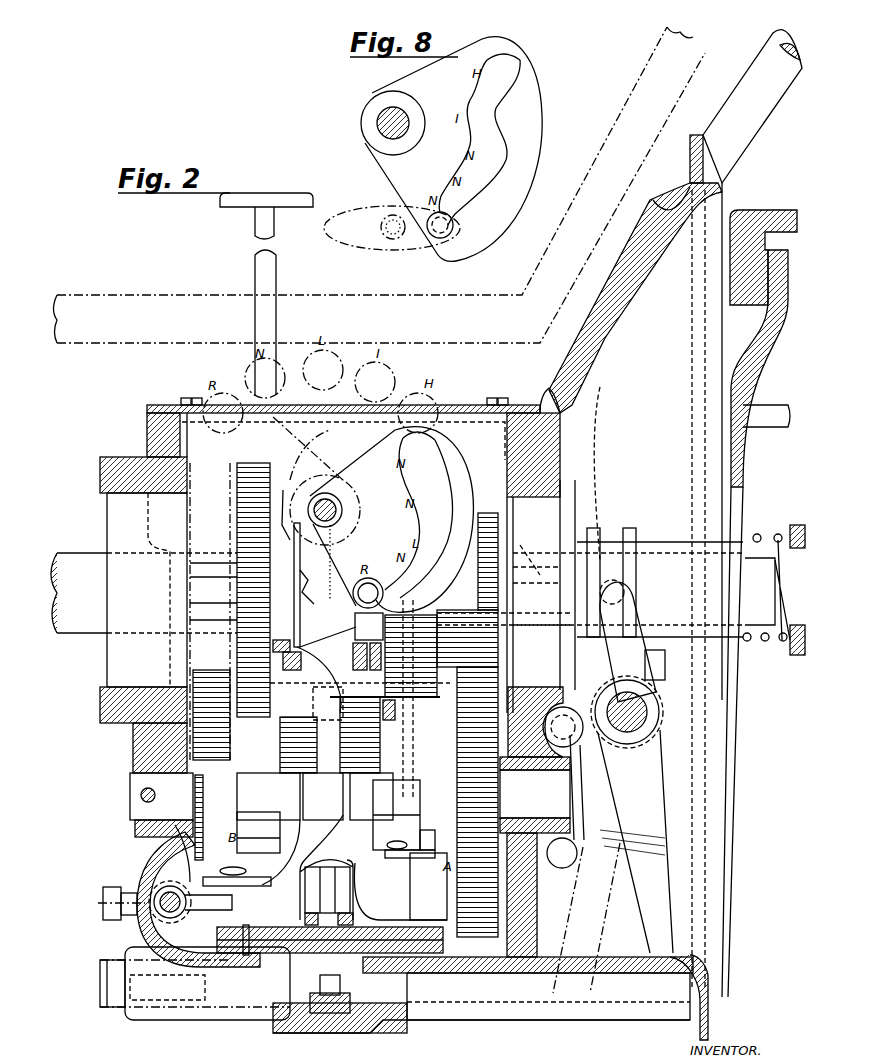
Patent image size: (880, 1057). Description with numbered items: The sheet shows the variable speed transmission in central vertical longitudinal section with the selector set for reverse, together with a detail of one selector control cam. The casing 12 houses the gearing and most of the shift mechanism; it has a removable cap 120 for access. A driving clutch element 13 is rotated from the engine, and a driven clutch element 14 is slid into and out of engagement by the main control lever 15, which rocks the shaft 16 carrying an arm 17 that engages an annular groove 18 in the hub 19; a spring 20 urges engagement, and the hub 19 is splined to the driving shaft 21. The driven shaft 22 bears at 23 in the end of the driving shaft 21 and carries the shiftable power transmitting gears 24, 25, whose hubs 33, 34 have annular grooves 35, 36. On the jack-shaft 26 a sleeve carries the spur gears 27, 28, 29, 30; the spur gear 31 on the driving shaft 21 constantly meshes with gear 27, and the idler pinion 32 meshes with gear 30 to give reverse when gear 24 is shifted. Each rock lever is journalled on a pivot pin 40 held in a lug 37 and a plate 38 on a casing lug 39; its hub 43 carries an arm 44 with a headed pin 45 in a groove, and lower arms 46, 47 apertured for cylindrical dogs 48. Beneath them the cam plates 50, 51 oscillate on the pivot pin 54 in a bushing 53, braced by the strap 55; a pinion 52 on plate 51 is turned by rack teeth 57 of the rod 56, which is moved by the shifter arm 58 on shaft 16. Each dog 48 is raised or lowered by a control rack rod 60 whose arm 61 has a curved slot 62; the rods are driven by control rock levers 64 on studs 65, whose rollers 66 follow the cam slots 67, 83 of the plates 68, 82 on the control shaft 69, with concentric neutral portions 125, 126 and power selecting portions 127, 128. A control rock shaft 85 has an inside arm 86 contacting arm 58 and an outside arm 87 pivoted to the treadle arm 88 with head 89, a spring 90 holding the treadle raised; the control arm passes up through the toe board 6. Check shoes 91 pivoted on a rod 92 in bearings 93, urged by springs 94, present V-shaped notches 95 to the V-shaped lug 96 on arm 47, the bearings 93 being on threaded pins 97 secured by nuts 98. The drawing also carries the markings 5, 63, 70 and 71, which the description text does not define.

In FIG. 2, the shift lever (phantom) 5 is at (103, 300).
In FIG. 2, the toe board 6 is at (688, 45).
In FIG. 2, the casing 12 is at (155, 432).
In FIG. 2, the driving clutch element 13 is at (770, 208).
In FIG. 2, the driven clutch element 14 is at (772, 326).
In FIG. 2, the main control lever 15 is at (752, 124).
In FIG. 2, the shaft 16 is at (642, 722).
In FIG. 2, the arm 17 is at (630, 597).
In FIG. 2, the annular groove 18 is at (605, 545).
In FIG. 2, the hub 19 is at (648, 545).
In FIG. 2, the spring 20 is at (757, 535).
In FIG. 2, the driving shaft 21 is at (780, 600).
In FIG. 2, the driven shaft 22 is at (80, 560).
In FIG. 2, the bearing recess 23 is at (482, 565).
In FIG. 2, the power transmitting gear 24 is at (252, 466).
In FIG. 2, the power transmitting gear 25 is at (440, 705).
In FIG. 2, the jack-shaft 26 is at (130, 812).
In FIG. 2, the spur gear 27 is at (520, 773).
In FIG. 2, the spur gear 28 is at (340, 766).
In FIG. 2, the spur gear 29 is at (290, 766).
In FIG. 2, the spur gear 30 is at (203, 780).
In FIG. 2, the spur gear 31 is at (480, 655).
In FIG. 2, the idler spur pinion 32 is at (218, 672).
In FIG. 2, the hub 33 is at (296, 522).
In FIG. 2, the hub 34 is at (353, 655).
In FIG. 2, the annular groove 35 is at (286, 508).
In FIG. 2, the annular groove 36 is at (384, 622).
In FIG. 2, the lower lever supporting lug 37 is at (327, 890).
In FIG. 2, the plate 38 is at (470, 690).
In FIG. 2, the casing lug 39 is at (458, 752).
In FIG. 2, the pivot pin 40 is at (350, 845).
In FIG. 2, the hub 43 is at (345, 815).
In FIG. 2, the arm 44 is at (319, 681).
In FIG. 2, the headed pin 45 is at (288, 638).
In FIG. 2, the arm 46 is at (380, 917).
In FIG. 2, the arm 47 is at (256, 929).
In FIG. 2, the cylindrical dog 48 is at (428, 886).
In FIG. 2, the plate 50 is at (220, 935).
In FIG. 2, the plate 51 is at (215, 945).
In FIG. 2, the pinion 52 is at (275, 988).
In FIG. 2, the bushing 53 is at (305, 1033).
In FIG. 2, the pivot pin 54 is at (330, 995).
In FIG. 2, the cross piece or strap 55 is at (305, 920).
In FIG. 2, the rod 56 is at (455, 1000).
In FIG. 2, the rack teeth 57 is at (445, 995).
In FIG. 2, the shifter arm 58 is at (662, 860).
In FIG. 2, the control rack rod 60 is at (405, 808).
In FIG. 2, the arm 61 is at (228, 873).
In FIG. 2, the curved slot 62 is at (345, 837).
In FIG. 2, the pivot pin 63 is at (338, 493).
In FIG. 8, the control rock lever 64 is at (366, 207).
In FIG. 2, the control rock lever 64 is at (347, 562).
In FIG. 8, the stud 65 is at (382, 229).
In FIG. 2, the stud 65 is at (302, 604).
In FIG. 8, the cam follower or roller 66 is at (448, 213).
In FIG. 2, the cam follower or roller 66 is at (370, 576).
In FIG. 2, the cam slot 67 is at (440, 515).
In FIG. 2, the plate 68 is at (372, 458).
In FIG. 8, the control shaft 69 is at (380, 118).
In FIG. 2, the link 70 is at (296, 445).
In FIG. 2, the rod 71 is at (760, 420).
In FIG. 8, the plate 82 is at (540, 134).
In FIG. 8, the cam slot 83 is at (497, 95).
In FIG. 2, the control rock shaft 85 is at (568, 736).
In FIG. 2, the arm 86 is at (576, 782).
In FIG. 2, the arm 87 is at (330, 735).
In FIG. 2, the treadle arm 88 is at (253, 270).
In FIG. 2, the head 89 is at (232, 208).
In FIG. 2, the spring 90 is at (345, 538).
In FIG. 2, the check shoe 91 is at (180, 892).
In FIG. 2, the rod 92 is at (132, 915).
In FIG. 2, the bearing 93 is at (165, 855).
In FIG. 2, the spring 94 is at (161, 853).
In FIG. 2, the V-shaped notch 95 is at (222, 908).
In FIG. 2, the V-shaped lug 96 is at (180, 927).
In FIG. 2, the threaded pin 97 is at (103, 900).
In FIG. 2, the nut 98 is at (121, 890).
In FIG. 2, the removable cap 120 is at (458, 410).
In FIG. 8, the concentric portion 125 is at (491, 184).
In FIG. 2, the concentric portion 126 is at (430, 478).
In FIG. 2, the power position selecting cam profile 127 is at (420, 562).
In FIG. 8, the power position selecting portion 128 is at (492, 131).